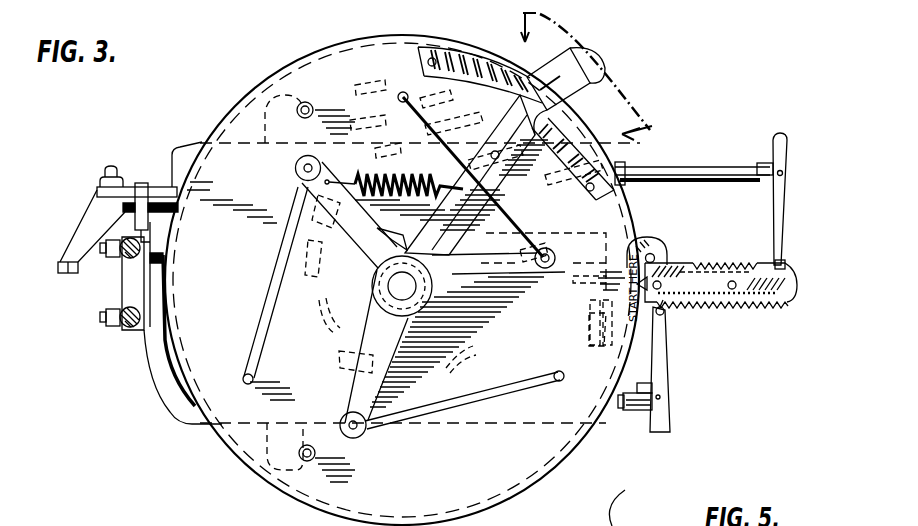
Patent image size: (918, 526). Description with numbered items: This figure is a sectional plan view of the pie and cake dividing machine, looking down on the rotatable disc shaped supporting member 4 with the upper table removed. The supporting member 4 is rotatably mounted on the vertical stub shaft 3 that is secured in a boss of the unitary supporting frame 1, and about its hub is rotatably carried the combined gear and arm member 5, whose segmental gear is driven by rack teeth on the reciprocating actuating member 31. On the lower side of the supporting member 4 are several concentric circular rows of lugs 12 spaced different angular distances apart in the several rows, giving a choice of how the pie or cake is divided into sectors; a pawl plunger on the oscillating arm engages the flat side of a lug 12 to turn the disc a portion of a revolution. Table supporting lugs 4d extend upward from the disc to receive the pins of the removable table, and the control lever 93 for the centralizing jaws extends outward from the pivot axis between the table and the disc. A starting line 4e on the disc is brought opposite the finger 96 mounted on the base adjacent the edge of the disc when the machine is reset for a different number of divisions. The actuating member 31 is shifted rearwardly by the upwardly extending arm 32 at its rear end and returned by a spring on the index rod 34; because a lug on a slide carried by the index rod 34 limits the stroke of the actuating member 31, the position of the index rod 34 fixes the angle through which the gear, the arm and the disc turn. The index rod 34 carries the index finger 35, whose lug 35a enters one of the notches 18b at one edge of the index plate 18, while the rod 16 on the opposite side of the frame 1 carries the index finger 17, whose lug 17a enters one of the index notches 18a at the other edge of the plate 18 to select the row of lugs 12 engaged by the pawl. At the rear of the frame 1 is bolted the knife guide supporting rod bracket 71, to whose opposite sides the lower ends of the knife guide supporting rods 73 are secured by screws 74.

The supporting frame 1 is at (192, 147).
The vertical stub shaft 3 is at (402, 286).
The disc shaped supporting member 4 is at (243, 112).
The table supporting lugs 4d is at (275, 505).
The starting line 4e is at (637, 240).
The combined gear and arm member 5 is at (575, 86).
The lugs 12 is at (578, 195).
The rod 16 is at (633, 403).
The index finger 17 is at (670, 406).
The lug 17a is at (665, 313).
The index plate 18 is at (787, 307).
The index notches 18a is at (773, 307).
The notches 18b is at (735, 263).
The actuating member 31 is at (165, 197).
The upwardly extending arm 32 is at (92, 213).
The index rod 34 is at (697, 167).
The index finger 35 is at (773, 147).
The lug 35a is at (782, 260).
The knife guide supporting rod bracket 71 is at (135, 330).
The knife guide supporting rods 73 is at (122, 327).
The screws 74 is at (103, 325).
The control lever 93 is at (605, 78).
The finger 96 is at (668, 270).